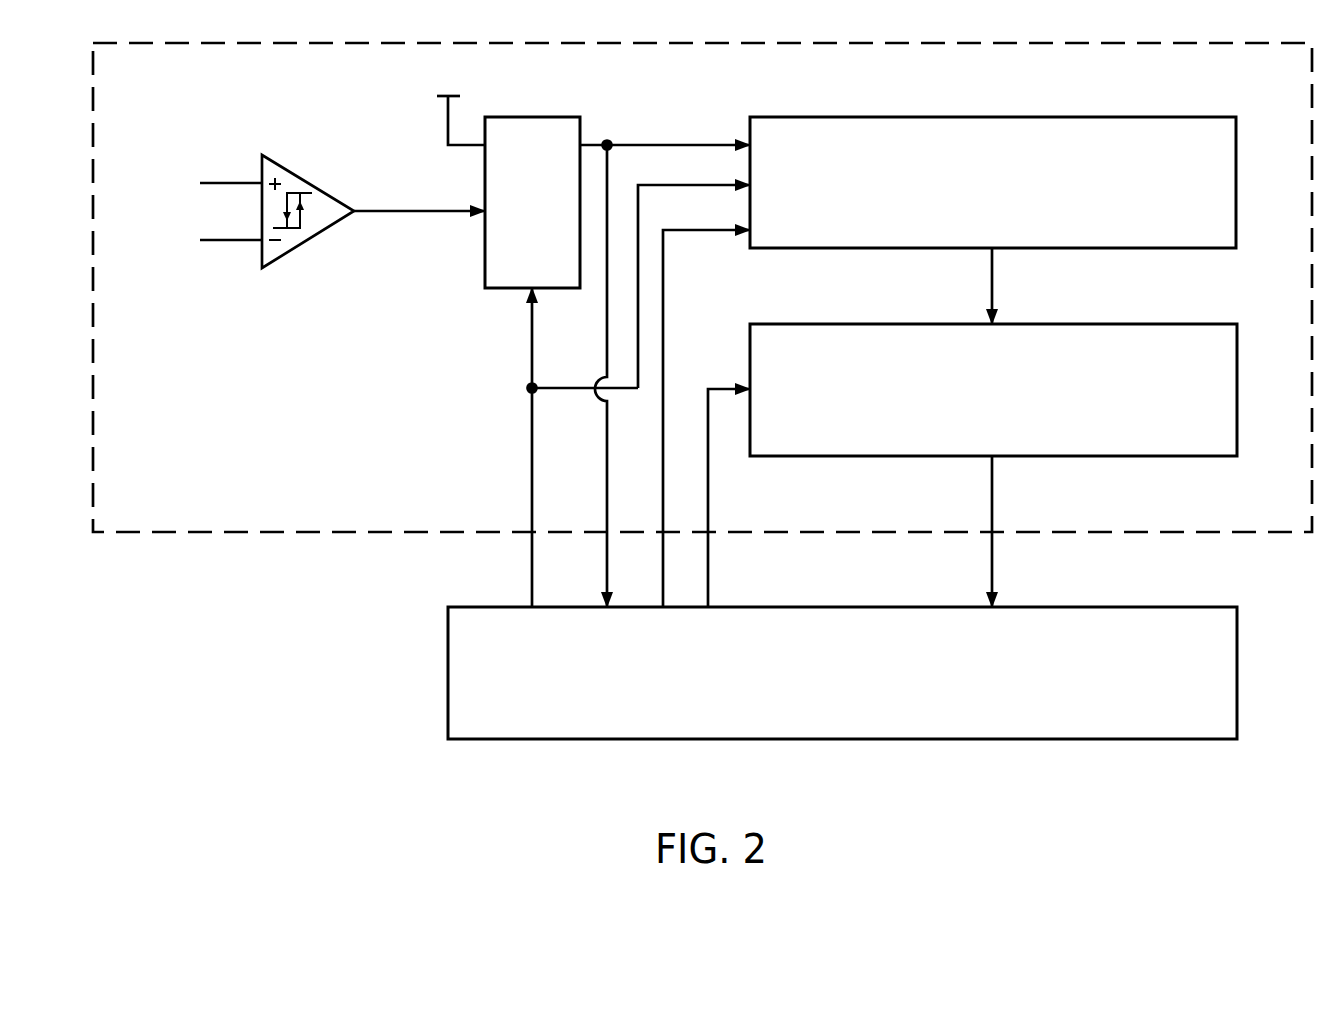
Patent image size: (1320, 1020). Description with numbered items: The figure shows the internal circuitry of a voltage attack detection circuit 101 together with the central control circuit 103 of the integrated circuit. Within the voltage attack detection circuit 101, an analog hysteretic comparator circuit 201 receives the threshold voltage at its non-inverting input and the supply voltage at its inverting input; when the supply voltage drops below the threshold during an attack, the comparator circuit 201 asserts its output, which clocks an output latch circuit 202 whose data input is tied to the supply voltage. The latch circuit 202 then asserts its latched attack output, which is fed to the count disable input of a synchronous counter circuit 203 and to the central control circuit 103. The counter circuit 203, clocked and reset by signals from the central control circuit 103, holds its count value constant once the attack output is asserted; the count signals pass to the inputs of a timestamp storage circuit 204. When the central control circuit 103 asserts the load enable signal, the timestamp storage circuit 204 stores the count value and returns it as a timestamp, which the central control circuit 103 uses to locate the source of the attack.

The voltage attack detection circuit 101 is at (1050, 43).
The hysteretic comparator circuit 201 is at (297, 173).
The latch circuit 202 is at (540, 117).
The counter circuit 203 is at (1021, 117).
The timestamp storage circuit 204 is at (1127, 324).
The central control circuit 103 is at (1133, 607).